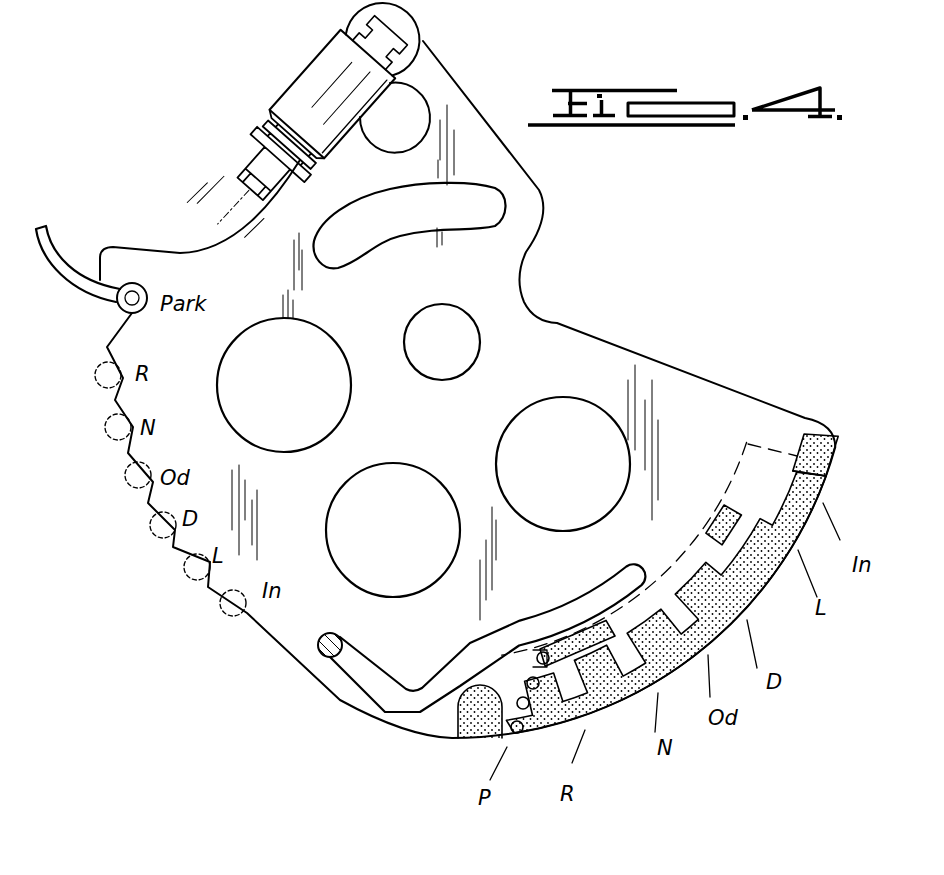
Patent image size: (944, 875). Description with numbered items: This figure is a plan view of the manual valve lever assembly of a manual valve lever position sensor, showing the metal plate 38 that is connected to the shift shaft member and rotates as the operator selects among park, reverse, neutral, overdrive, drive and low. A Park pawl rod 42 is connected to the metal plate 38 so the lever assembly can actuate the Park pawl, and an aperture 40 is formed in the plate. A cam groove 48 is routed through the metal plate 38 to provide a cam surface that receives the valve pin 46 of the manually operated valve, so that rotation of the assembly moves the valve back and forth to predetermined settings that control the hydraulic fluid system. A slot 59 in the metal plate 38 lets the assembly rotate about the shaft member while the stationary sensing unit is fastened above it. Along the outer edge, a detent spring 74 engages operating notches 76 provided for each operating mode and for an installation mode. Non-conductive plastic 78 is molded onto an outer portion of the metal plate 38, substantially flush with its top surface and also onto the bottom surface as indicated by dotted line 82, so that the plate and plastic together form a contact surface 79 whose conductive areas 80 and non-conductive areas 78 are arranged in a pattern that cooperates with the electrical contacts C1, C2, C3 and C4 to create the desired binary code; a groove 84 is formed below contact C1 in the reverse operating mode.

The metal plate 38 is at (632, 367).
The aperture 40 is at (462, 349).
The Park pawl rod 42 is at (318, 80).
The valve pin 46 is at (322, 653).
The cam groove 48 is at (360, 667).
The slot 59 is at (422, 213).
The detent spring 74 is at (58, 245).
The operating notches 76 is at (127, 473).
The non-conductive plastic 78 is at (812, 491).
The contact surface 79 is at (822, 408).
The conductive areas 80 is at (758, 465).
The dotted line 82 is at (735, 478).
The groove 84 is at (542, 705).
The contact C1 is at (520, 735).
The contact C2 is at (517, 700).
The contact C3 is at (528, 678).
The contact C4 is at (548, 652).